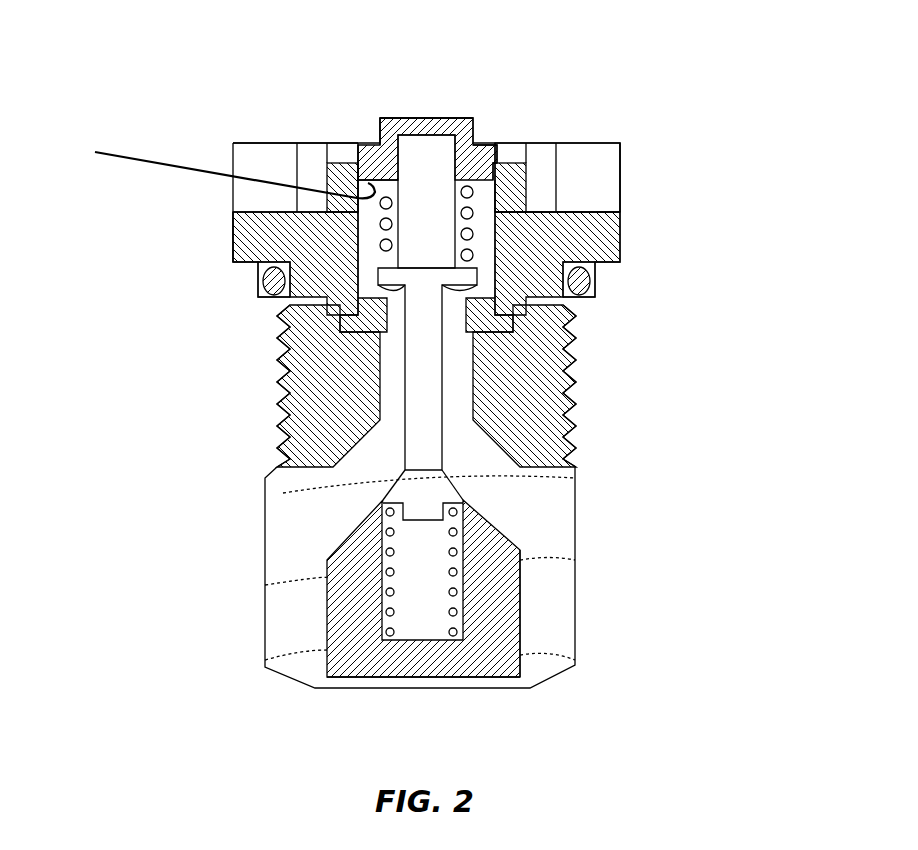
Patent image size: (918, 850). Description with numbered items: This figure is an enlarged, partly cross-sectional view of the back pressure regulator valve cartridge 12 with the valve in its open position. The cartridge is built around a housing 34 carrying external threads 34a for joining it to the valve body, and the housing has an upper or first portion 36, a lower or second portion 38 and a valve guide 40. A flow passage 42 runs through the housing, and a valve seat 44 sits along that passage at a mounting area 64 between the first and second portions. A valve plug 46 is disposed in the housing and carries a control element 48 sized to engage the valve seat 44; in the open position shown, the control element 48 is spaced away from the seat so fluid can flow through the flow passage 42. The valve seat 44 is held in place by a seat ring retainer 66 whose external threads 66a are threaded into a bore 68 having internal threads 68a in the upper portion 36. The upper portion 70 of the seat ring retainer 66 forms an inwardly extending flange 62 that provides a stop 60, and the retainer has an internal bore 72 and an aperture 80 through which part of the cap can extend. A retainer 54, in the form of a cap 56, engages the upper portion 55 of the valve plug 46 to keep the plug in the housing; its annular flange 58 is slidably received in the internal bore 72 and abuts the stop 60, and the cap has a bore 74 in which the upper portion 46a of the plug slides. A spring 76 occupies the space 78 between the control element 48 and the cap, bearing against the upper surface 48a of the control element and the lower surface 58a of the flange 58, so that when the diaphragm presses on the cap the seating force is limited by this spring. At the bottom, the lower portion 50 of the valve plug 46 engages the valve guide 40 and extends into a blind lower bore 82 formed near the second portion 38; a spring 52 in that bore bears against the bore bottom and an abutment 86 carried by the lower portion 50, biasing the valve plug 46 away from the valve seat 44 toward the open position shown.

The valve cartridge 12 is at (206, 450).
The housing 34 is at (578, 382).
The external threads 34a is at (578, 415).
The first portion 36 is at (607, 143).
The second portion 38 is at (560, 655).
The valve guide 40 is at (375, 597).
The flow passage 42 is at (385, 392).
The valve seat 44 is at (285, 348).
The valve plug 46 is at (555, 242).
The upper portion of the valve plug 46a is at (475, 284).
The control element 48 is at (240, 250).
The upper surface of the control element 48a is at (283, 308).
The lower portion of the valve plug 50 is at (392, 545).
The spring 52 is at (360, 650).
The retainer 54 is at (477, 133).
The upper portion of the valve plug 55 is at (572, 143).
The cap 56 is at (392, 118).
The annular flange 58 is at (330, 163).
The lower surface of the flange 58a is at (208, 171).
The stop 60 is at (481, 143).
The inwardly extending flange 62 is at (370, 143).
The mounting area 64 is at (500, 347).
The seat ring retainer 66 is at (560, 222).
The external threads 66a is at (605, 265).
The bore 68 is at (335, 203).
The internal threads 68a is at (250, 232).
The upper portion of the seat ring retainer 70 is at (507, 143).
The internal bore 72 is at (560, 192).
The bore 74 is at (434, 118).
The spring 76 is at (410, 118).
The space 78 is at (533, 143).
The aperture 80 is at (430, 297).
The lower bore 82 is at (480, 572).
The abutment 86 is at (470, 485).